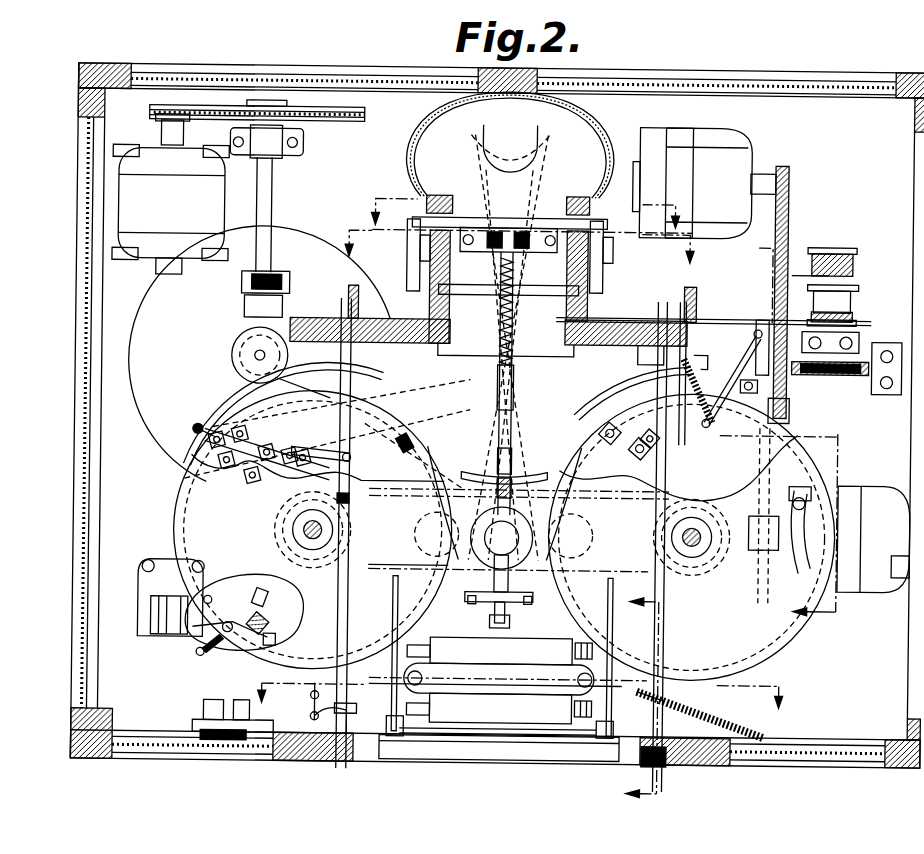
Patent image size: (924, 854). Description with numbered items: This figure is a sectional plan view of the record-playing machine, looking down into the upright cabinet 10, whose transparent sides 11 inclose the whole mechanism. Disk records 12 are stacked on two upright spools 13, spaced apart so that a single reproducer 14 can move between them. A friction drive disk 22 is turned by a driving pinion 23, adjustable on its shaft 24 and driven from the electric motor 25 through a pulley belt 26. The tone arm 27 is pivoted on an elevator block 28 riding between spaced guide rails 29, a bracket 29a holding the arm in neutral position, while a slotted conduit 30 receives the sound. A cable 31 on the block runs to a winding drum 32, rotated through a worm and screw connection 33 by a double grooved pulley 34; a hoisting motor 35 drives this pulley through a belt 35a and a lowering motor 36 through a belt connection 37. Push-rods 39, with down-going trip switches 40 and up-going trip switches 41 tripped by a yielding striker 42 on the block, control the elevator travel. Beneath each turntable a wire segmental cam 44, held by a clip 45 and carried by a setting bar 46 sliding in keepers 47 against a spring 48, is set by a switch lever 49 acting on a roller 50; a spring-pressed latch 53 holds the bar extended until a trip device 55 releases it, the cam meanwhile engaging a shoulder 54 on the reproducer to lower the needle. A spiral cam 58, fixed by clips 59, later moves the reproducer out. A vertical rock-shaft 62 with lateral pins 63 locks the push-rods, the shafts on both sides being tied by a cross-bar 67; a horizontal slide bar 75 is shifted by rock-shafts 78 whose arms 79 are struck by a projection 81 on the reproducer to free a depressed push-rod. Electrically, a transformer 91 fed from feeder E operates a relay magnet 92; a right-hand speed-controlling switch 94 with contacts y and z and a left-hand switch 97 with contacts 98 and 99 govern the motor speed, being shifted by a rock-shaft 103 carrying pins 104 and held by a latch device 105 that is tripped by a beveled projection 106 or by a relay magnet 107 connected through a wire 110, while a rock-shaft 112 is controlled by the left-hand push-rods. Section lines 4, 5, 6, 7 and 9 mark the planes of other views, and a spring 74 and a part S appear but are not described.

The section line 4- 4 is at (659, 703).
The section line 5- 5 is at (521, 689).
The section line 6- 6 is at (784, 426).
The section line 7- 7 is at (521, 210).
The section line 9- 9 is at (518, 242).
The upright cabinet 10 is at (75, 748).
The transparent sides 11 is at (75, 340).
The records 12 is at (351, 606).
The upright shafts or spools 13 is at (315, 542).
The reproducer 14 is at (515, 596).
The friction drive disk 22 is at (212, 297).
The driving pinion 23 is at (241, 290).
The shaft 24 is at (270, 197).
The electric motor 25 is at (171, 209).
The pulley belt 26 is at (257, 115).
The tone arm 27 is at (513, 338).
The elevator block 28 is at (551, 324).
The guides or rails 29 is at (437, 325).
The bracket 29a is at (514, 451).
The vertically slotted conduit 30 is at (578, 129).
The cable 31 is at (708, 315).
The winding drum 32 is at (852, 298).
The worm and screw connection 33 is at (822, 371).
The double grooved pulley 34 is at (787, 413).
The motor 35 is at (873, 539).
The belt 35a is at (765, 460).
The motor 36 is at (704, 184).
The belt connection 37 is at (773, 259).
The push-rods 39 is at (668, 607).
The down-going elevator trip switches 40 is at (600, 274).
The up-going trip switches 41 is at (405, 275).
The yielding striker 42 is at (404, 222).
The segmental cam 44 is at (267, 439).
The clip 45 is at (276, 646).
The setting bar 46 is at (260, 452).
The keepers 47 is at (233, 486).
The spring 48 is at (360, 499).
The switch lever 49 is at (352, 373).
The roller 50 is at (198, 427).
The spring-pressed latch 53 is at (343, 458).
The shoulder 54 is at (540, 612).
The trip device 55 is at (352, 480).
The spiral cam 58 is at (396, 393).
The clips 59 is at (412, 436).
The vertical rock-shaft 62 is at (314, 718).
The lateral pins 63 is at (314, 697).
The cross-bar 67 is at (513, 685).
The spring 74 is at (700, 713).
The slidable bar 75 is at (499, 747).
The vertical rock-shafts 78 is at (400, 733).
The horizontally projecting arms 79 is at (612, 620).
The projection 81 is at (505, 620).
The transformer 91 is at (508, 665).
The relay magnet 92 is at (200, 712).
The speed-controlling switch 94 is at (703, 423).
The second speed-controlling switch 97 is at (240, 614).
The contact 98 is at (270, 602).
The contact 99 is at (274, 627).
The vertical rock-shaft 103 is at (757, 330).
The lugs or pins 104 is at (752, 338).
The latch device 105 is at (212, 600).
The beveled projection 106 is at (800, 548).
The relay magnet 107 is at (172, 638).
The wire 110 is at (221, 657).
The vertical rock-shaft 112 is at (359, 701).
The screw S is at (404, 245).
The feeder E is at (350, 285).
The contact Y y is at (602, 447).
The contact Z z is at (640, 462).